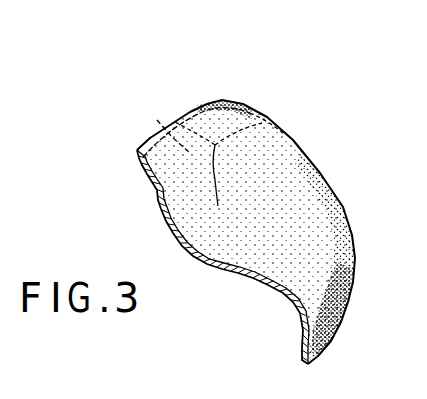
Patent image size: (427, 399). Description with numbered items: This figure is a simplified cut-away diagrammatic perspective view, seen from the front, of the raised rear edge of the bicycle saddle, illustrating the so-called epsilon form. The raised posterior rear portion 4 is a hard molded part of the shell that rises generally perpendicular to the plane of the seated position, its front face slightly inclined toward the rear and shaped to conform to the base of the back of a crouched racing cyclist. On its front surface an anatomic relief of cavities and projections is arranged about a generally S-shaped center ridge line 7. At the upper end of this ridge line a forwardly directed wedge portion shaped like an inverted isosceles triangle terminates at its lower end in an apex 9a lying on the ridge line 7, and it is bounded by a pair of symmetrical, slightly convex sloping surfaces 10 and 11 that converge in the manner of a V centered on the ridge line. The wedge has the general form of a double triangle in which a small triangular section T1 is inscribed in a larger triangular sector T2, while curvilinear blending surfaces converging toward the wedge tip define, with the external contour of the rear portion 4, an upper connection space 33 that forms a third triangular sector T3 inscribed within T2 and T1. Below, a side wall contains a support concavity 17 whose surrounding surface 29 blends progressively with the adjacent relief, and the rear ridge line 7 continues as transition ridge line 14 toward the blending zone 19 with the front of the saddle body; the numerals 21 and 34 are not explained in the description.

The raised posterior rear portion 4 is at (300, 98).
The center ridge line 7 is at (197, 189).
The apex 9a is at (216, 180).
The sloping surface 10 is at (248, 120).
The sloping surface 11 is at (212, 102).
The transition ridge line 14 is at (230, 181).
The concavity 17 is at (283, 207).
The blending zone 19 is at (197, 232).
The side wall 21 is at (190, 153).
The surrounding surface 29 is at (332, 271).
The upper connection space 33 is at (218, 100).
The portion 34 is at (33, 5).
The small triangular section T1 is at (246, 106).
The larger triangular sector T2 is at (197, 102).
The third triangular sector T3 is at (218, 100).